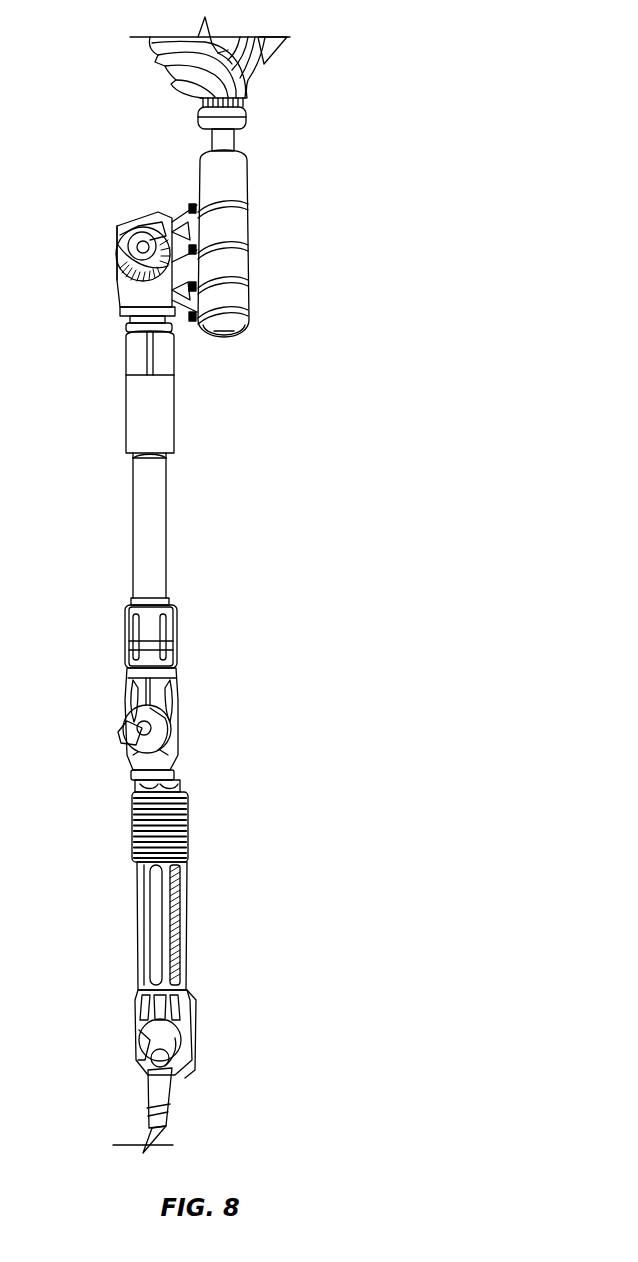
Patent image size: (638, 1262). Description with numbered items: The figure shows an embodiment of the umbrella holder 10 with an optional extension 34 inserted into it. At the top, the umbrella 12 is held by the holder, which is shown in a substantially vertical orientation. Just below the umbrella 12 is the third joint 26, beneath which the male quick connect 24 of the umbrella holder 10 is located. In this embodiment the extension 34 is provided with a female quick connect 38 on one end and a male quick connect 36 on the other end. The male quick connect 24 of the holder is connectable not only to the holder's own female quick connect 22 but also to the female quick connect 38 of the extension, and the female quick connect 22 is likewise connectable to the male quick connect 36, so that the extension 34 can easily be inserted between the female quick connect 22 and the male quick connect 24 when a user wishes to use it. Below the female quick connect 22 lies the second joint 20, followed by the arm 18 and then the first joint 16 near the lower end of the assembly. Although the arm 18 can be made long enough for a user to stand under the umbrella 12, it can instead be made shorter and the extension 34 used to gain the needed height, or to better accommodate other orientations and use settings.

The umbrella holder 10 is at (418, 95).
The umbrella 12 is at (262, 60).
The first joint 16 is at (214, 1050).
The arm 18 is at (168, 937).
The second joint 20 is at (196, 718).
The female quick connect 22 is at (168, 633).
The male quick connect 24 is at (125, 322).
The third joint 26 is at (98, 235).
The extension 34 is at (114, 510).
The male quick connect 36 is at (166, 603).
The female quick connect 38 is at (134, 360).